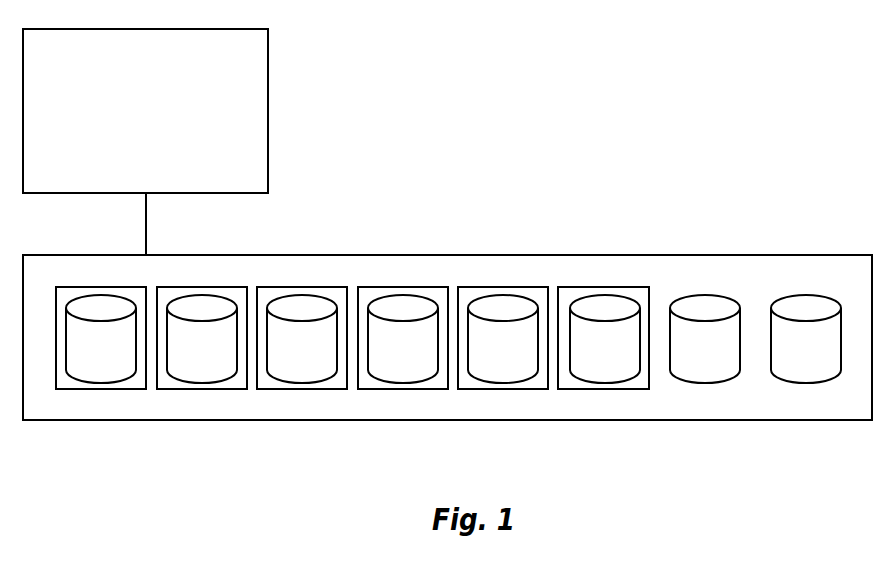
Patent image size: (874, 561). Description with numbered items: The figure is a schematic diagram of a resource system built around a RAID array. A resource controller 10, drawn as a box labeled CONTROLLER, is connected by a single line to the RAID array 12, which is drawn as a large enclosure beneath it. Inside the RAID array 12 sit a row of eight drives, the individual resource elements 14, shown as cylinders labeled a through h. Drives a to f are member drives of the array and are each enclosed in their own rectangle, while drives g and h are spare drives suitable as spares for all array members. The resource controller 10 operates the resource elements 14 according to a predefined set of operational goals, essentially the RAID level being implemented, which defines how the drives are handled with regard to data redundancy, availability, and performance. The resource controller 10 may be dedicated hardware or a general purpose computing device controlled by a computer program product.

The resource controller 10 is at (268, 79).
The RAID array 12 is at (447, 297).
The resource element 14 is at (603, 295).